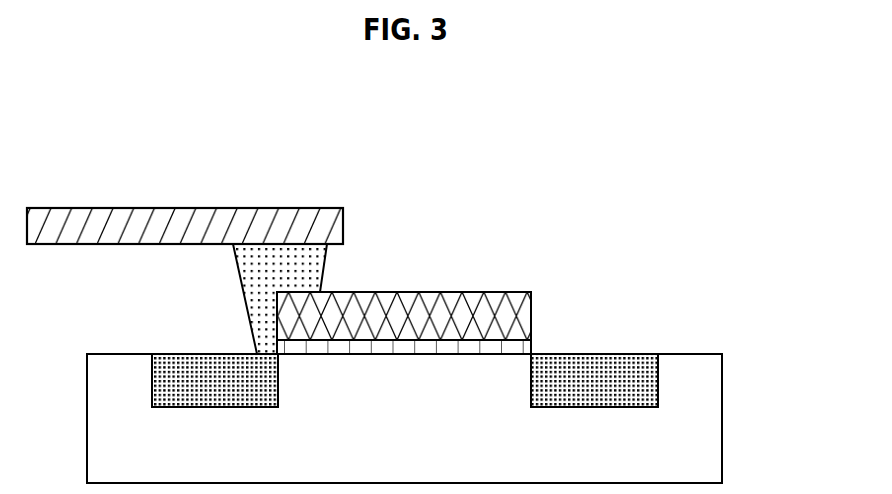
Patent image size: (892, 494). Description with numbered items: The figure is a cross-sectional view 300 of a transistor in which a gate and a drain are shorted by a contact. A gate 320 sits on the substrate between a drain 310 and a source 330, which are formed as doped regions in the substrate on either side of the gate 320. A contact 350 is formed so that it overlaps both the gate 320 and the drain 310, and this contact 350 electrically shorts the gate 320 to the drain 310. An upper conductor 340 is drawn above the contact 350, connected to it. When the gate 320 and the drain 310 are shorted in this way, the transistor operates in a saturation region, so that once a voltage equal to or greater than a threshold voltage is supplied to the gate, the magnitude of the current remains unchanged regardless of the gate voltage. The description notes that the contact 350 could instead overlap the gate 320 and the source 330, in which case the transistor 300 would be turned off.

The cross-sectional view of a transistor 300 is at (425, 112).
The drain 310 is at (152, 378).
The gate 320 is at (457, 292).
The source 330 is at (658, 380).
The metal interconnect line 340 is at (136, 207).
The contact 350 is at (238, 278).